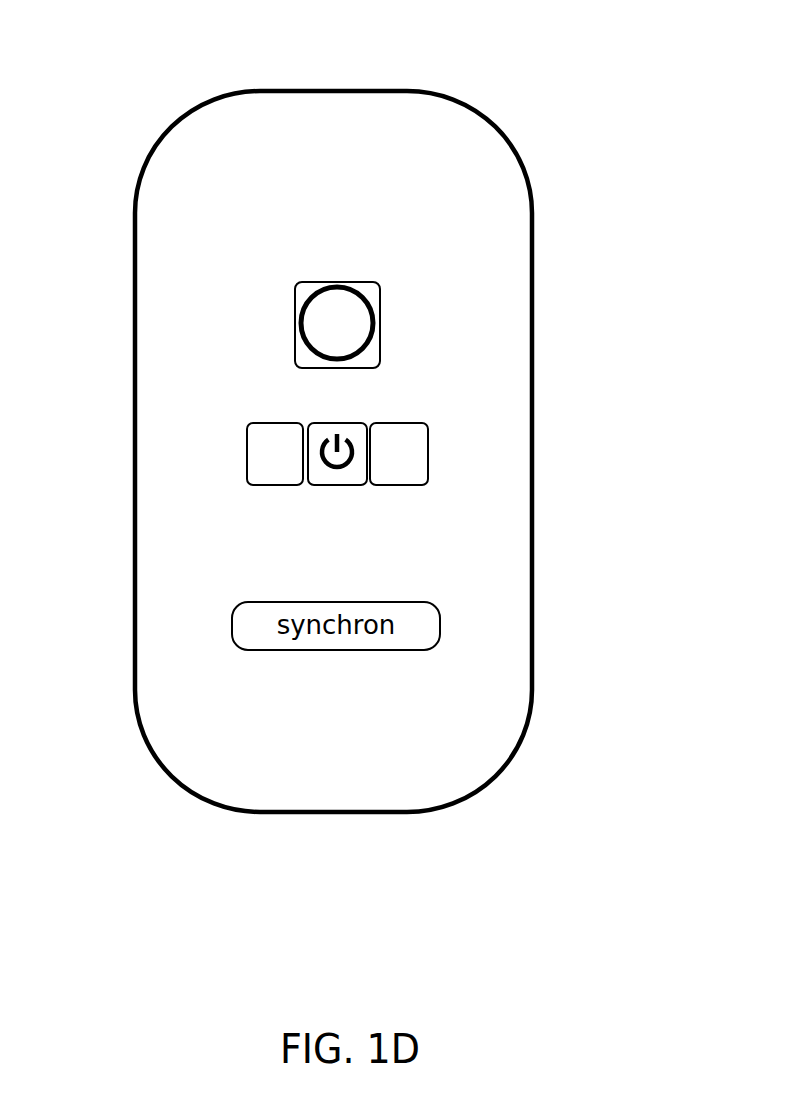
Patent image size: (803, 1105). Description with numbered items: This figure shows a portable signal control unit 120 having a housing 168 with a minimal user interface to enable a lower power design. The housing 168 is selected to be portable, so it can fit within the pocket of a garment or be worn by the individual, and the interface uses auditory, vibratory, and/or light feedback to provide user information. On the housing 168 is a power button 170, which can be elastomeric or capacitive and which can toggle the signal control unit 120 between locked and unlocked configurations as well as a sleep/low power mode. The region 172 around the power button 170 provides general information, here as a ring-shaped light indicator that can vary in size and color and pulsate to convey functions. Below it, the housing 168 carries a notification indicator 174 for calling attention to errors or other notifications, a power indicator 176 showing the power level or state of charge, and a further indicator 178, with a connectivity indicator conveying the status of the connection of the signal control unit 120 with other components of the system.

The portable signal control unit 120 is at (344, 90).
The housing 168 is at (175, 204).
The power button 170 is at (333, 333).
The information region 172 is at (381, 349).
The notification indicator 174 is at (247, 467).
The power indicator 176 is at (330, 485).
The S button 178 is at (408, 485).